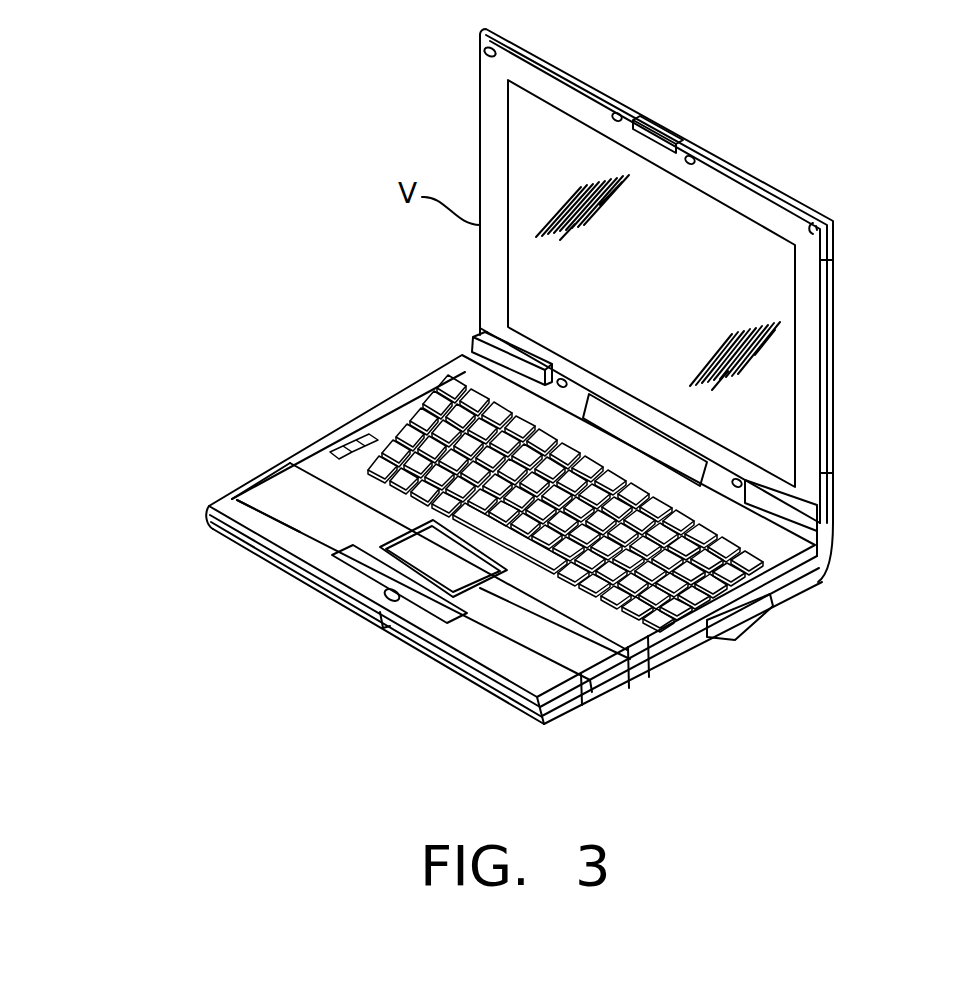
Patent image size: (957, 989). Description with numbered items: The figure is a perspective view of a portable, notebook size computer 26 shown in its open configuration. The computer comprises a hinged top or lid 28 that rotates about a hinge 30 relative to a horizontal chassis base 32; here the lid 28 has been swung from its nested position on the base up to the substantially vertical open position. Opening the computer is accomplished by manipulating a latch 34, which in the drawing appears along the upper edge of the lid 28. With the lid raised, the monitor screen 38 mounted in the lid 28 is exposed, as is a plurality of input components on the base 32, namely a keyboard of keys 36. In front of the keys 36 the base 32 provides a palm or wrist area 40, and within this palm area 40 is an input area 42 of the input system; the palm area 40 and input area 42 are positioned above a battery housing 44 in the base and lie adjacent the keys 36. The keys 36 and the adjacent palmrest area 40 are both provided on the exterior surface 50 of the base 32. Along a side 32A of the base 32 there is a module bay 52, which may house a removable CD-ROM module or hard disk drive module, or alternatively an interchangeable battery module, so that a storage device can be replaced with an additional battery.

The portable computer 26 is at (340, 230).
The lid 28 is at (487, 127).
The hinge 30 is at (720, 466).
The chassis base 32 is at (787, 587).
The side of base 32A is at (673, 652).
The latch 34 is at (647, 136).
The keyboard keys 36 is at (372, 437).
The monitor screen 38 is at (733, 240).
The palm area 40 is at (272, 493).
The input area 42 is at (345, 601).
The battery housing 44 is at (488, 690).
The exterior surface 50 is at (813, 562).
The module bay 52 is at (737, 617).